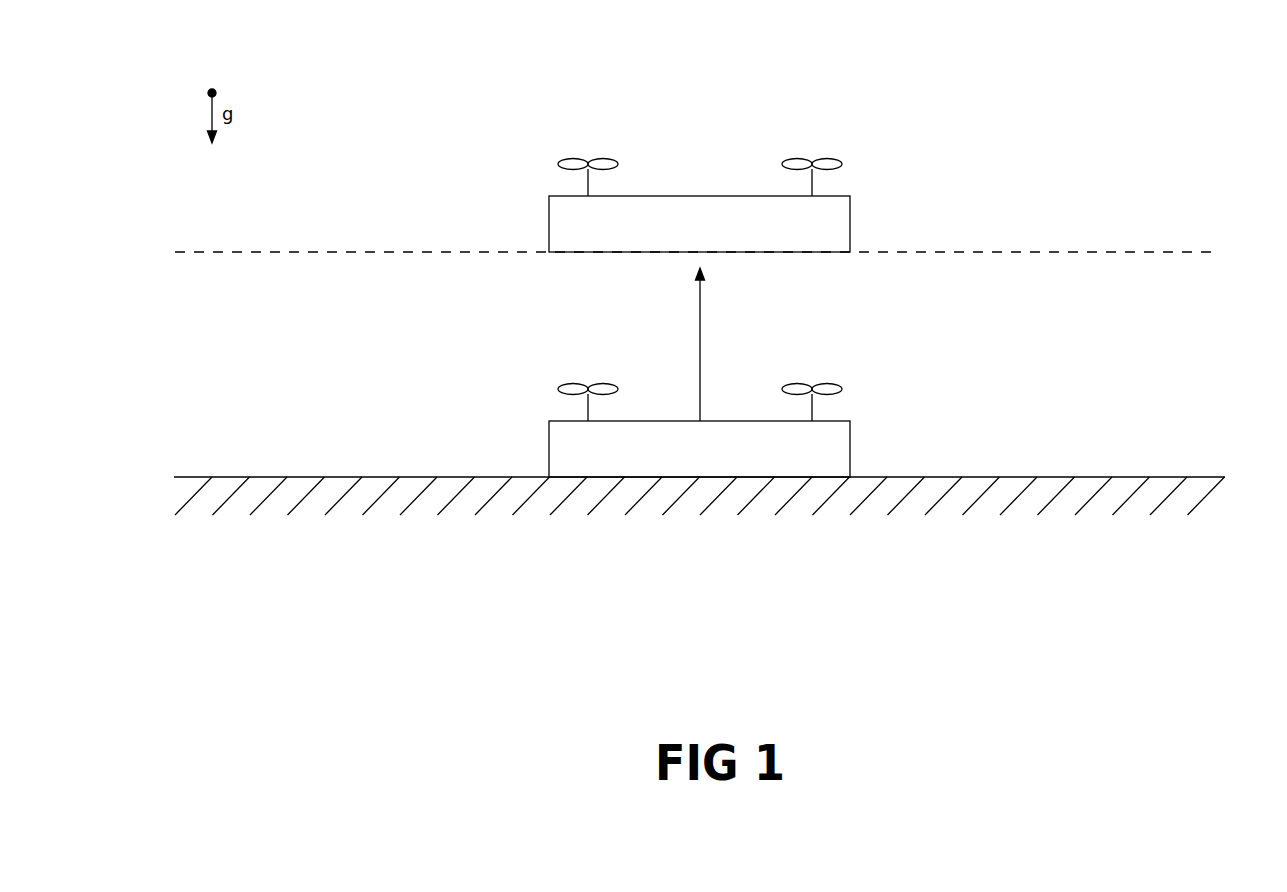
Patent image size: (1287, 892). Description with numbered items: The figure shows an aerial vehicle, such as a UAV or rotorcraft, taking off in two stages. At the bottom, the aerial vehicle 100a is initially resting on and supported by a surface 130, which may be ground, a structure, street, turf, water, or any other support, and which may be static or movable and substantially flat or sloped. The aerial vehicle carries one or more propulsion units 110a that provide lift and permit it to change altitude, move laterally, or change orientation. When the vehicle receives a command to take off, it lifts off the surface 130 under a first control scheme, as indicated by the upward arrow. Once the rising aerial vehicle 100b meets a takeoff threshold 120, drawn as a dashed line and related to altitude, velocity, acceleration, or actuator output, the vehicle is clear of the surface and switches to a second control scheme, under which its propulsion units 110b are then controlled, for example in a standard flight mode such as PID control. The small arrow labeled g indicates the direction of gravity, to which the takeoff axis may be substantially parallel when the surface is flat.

The aerial vehicle 100a is at (699, 449).
The aerial vehicle 100b is at (699, 224).
The propulsion units 110a is at (855, 380).
The propulsion units 110b is at (855, 155).
The takeoff threshold 120 is at (722, 251).
The surface 130 is at (1124, 448).